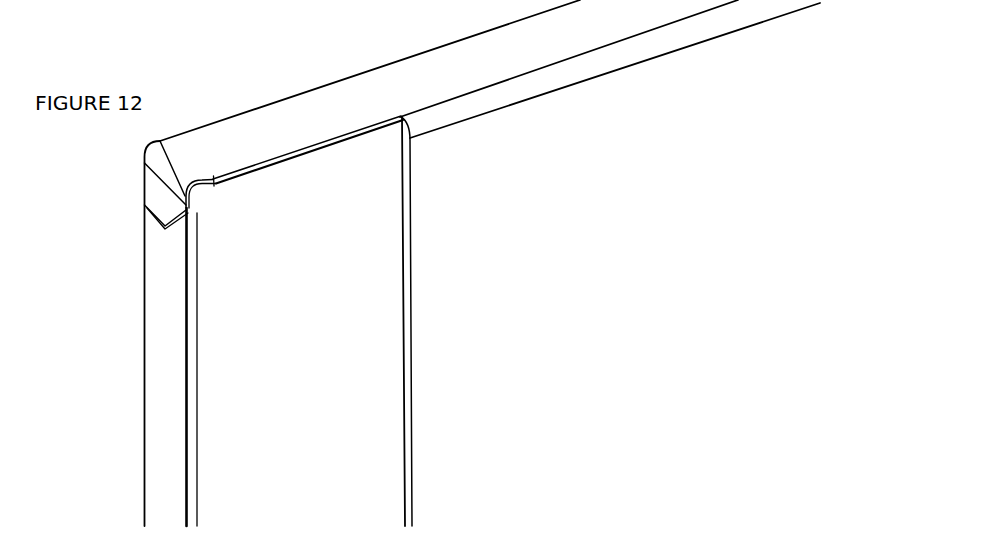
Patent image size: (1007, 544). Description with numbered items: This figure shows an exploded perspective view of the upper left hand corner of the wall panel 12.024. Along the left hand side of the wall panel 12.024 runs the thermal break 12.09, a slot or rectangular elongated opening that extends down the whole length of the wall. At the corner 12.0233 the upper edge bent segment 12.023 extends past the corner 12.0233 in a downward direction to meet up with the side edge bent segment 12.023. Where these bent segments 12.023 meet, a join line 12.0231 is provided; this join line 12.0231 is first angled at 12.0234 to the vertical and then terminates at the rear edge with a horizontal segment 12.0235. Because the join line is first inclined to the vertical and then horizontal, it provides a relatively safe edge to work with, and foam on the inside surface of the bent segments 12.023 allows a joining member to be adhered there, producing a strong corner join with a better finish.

The bent segment 12.023 is at (327, 107).
The thermal break 12.09 is at (322, 310).
The wall panel 12.024 is at (545, 354).
The corner 12.0233 is at (177, 172).
The join line 12.0231 is at (197, 212).
The angled portion of join line 12.0234 is at (190, 213).
The horizontal segment 12.0235 is at (144, 205).